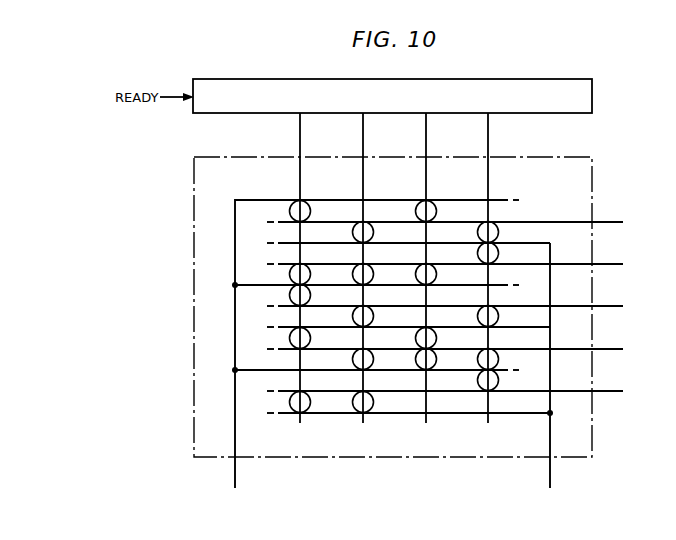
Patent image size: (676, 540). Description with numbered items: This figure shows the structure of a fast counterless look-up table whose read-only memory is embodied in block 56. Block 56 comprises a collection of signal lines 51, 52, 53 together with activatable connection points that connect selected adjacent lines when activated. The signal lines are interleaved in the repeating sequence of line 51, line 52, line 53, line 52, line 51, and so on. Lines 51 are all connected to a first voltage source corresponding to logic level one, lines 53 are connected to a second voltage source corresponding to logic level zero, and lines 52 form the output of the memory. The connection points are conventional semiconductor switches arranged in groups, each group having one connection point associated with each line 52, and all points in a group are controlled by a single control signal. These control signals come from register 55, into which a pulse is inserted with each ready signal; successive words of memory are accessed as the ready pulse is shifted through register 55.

The signal lines 51 is at (505, 200).
The signal lines 52 is at (536, 222).
The signal lines 53 is at (551, 254).
The register 55 is at (594, 98).
The block 56 is at (594, 176).